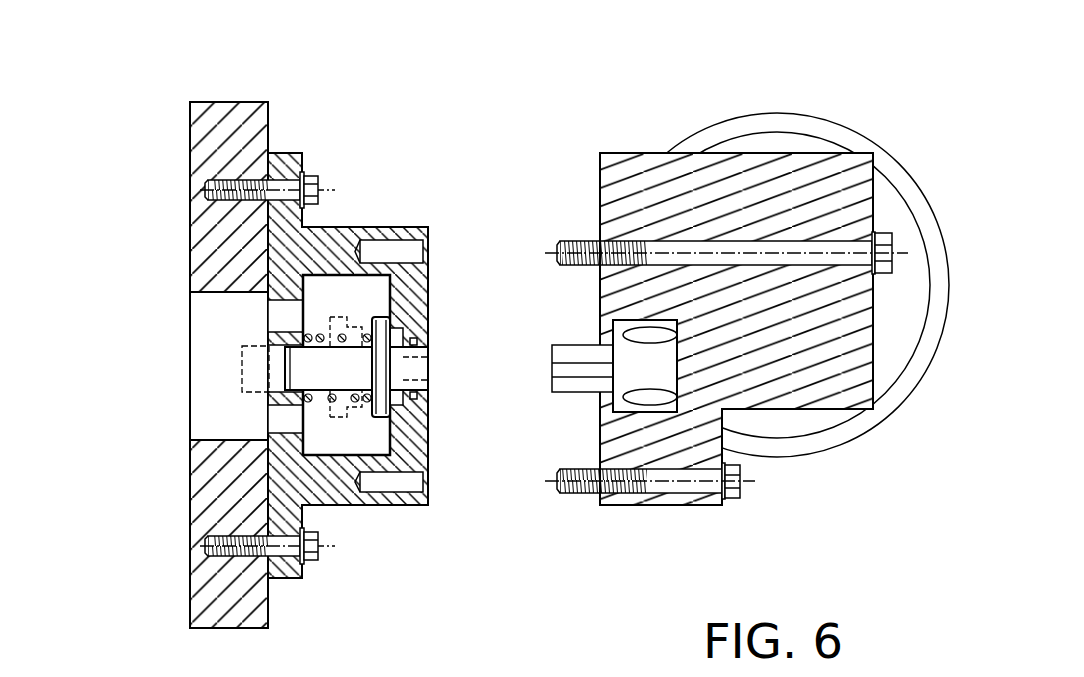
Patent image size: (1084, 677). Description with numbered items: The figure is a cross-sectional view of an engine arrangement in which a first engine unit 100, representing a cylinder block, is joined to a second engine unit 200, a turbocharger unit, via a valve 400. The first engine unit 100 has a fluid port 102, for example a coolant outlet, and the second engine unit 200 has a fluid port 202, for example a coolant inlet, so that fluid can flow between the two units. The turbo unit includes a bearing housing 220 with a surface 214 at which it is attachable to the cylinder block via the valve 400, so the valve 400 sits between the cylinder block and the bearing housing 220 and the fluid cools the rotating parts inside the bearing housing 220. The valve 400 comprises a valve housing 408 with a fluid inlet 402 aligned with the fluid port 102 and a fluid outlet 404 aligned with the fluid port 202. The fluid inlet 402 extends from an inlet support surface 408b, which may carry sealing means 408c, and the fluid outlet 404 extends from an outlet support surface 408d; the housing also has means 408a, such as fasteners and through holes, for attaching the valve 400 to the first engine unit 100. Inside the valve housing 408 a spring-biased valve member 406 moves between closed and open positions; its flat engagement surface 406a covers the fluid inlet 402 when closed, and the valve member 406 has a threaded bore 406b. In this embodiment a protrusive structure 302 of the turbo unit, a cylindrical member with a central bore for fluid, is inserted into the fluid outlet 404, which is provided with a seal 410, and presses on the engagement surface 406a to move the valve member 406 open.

The first engine unit 100 is at (190, 142).
The fluid port 102 is at (210, 360).
The second engine unit 200 is at (860, 81).
The fluid port 202 is at (550, 388).
The surface 214 is at (600, 197).
The bearing housing 220 is at (809, 192).
The protrusive structure 302 is at (578, 345).
The valve 400 is at (372, 505).
The fluid inlet 402 is at (285, 367).
The fluid outlet 404 is at (434, 349).
The valve member 406 is at (320, 367).
The engagement surface 406a is at (432, 372).
The threaded bore 406b is at (250, 308).
The valve housing 408 is at (418, 437).
The means for attaching the valve 408a is at (318, 182).
The inlet support surface 408b is at (268, 473).
The sealing means 408c is at (268, 500).
The outlet support surface 408d is at (430, 295).
The seal 410 is at (412, 337).